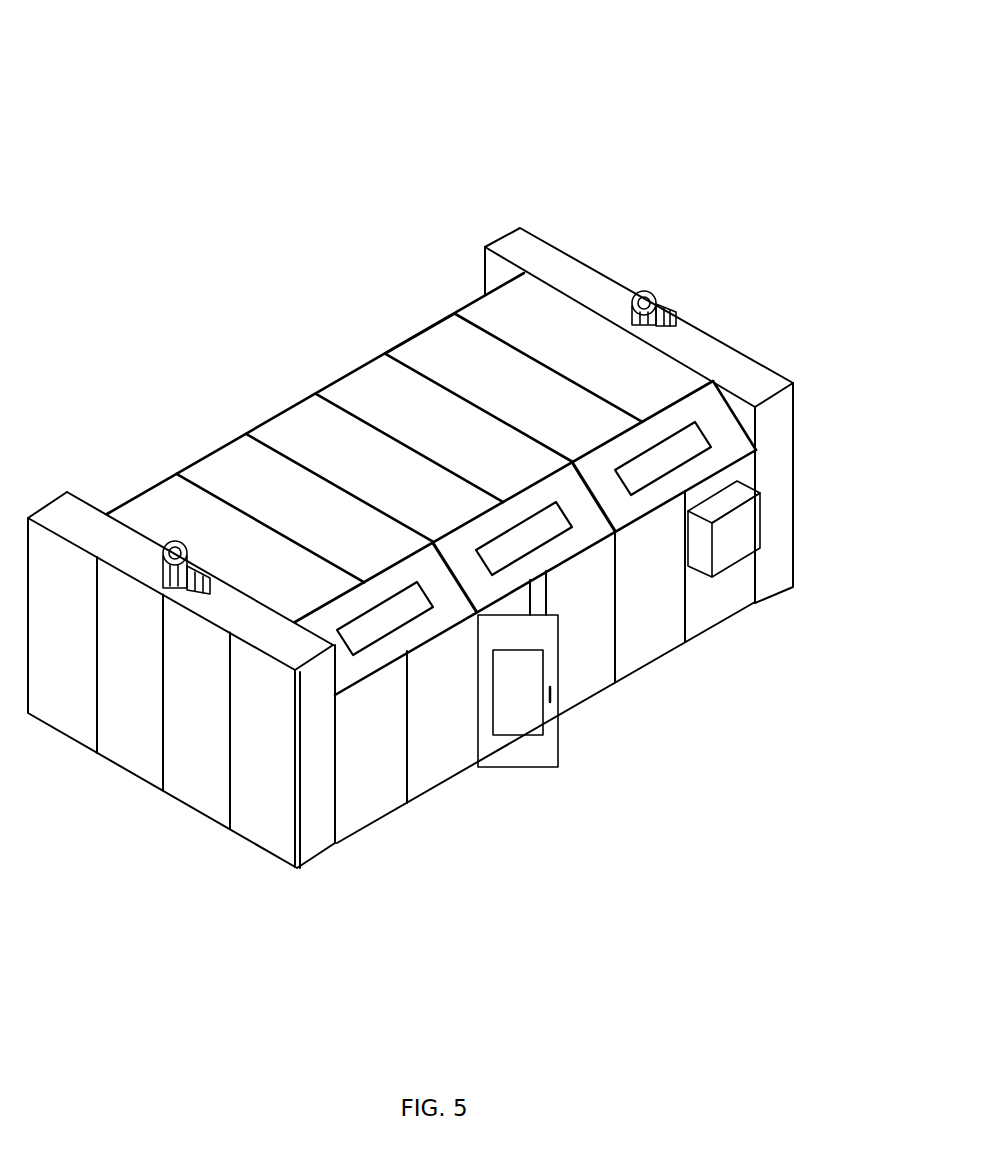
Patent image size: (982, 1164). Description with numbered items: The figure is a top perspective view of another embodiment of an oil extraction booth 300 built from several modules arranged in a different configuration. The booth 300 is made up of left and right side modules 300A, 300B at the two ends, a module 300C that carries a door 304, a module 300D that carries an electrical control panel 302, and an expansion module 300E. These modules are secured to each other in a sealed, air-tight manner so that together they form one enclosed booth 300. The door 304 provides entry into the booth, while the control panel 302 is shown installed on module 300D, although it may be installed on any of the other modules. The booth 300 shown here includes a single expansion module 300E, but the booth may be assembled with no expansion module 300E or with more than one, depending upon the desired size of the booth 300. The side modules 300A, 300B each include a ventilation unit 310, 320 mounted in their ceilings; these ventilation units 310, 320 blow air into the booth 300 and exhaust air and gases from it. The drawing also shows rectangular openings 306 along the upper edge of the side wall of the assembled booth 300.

The oil extraction booth 300 is at (186, 133).
The left side module 300A is at (262, 843).
The right side module 300B is at (535, 232).
The module with door 300C is at (348, 383).
The module with electrical control panel 300D is at (440, 313).
The expansion module 300E is at (373, 820).
The electrical control panel 302 is at (720, 560).
The door 304 is at (550, 770).
The air vents 306 is at (530, 537).
The ventilation unit 310 is at (167, 545).
The ventilation unit 320 is at (658, 292).